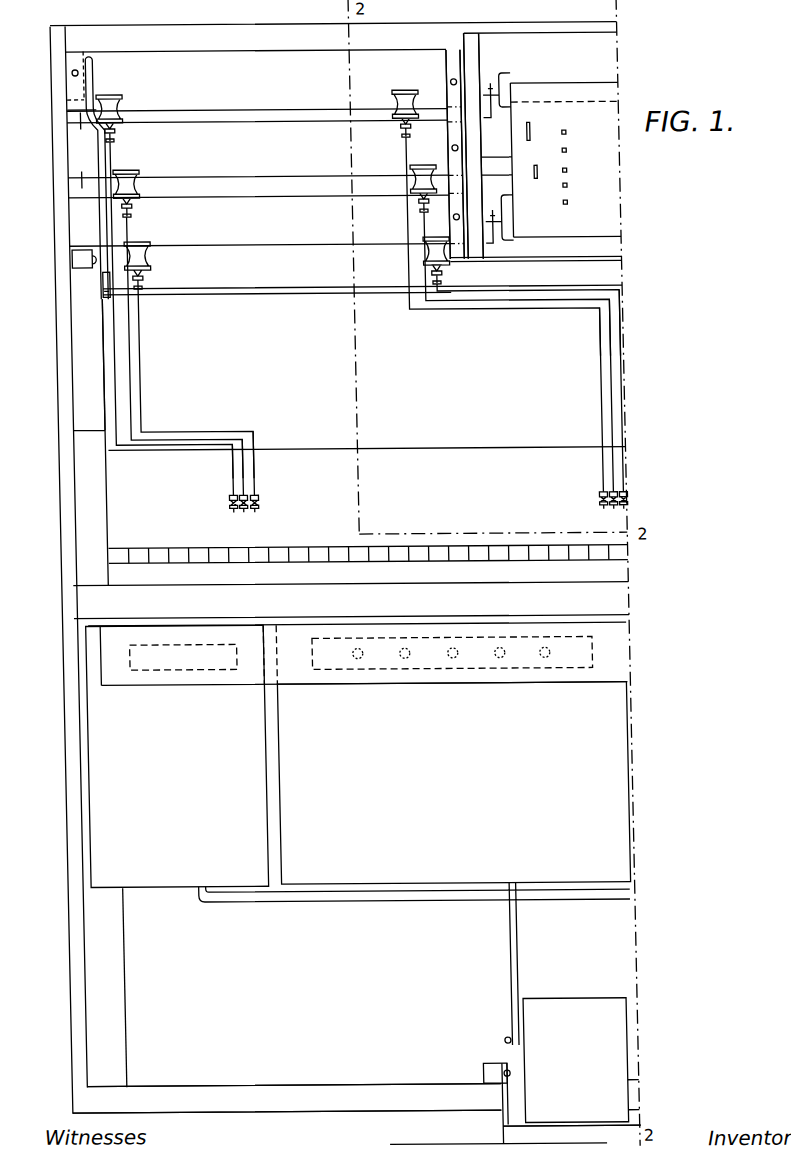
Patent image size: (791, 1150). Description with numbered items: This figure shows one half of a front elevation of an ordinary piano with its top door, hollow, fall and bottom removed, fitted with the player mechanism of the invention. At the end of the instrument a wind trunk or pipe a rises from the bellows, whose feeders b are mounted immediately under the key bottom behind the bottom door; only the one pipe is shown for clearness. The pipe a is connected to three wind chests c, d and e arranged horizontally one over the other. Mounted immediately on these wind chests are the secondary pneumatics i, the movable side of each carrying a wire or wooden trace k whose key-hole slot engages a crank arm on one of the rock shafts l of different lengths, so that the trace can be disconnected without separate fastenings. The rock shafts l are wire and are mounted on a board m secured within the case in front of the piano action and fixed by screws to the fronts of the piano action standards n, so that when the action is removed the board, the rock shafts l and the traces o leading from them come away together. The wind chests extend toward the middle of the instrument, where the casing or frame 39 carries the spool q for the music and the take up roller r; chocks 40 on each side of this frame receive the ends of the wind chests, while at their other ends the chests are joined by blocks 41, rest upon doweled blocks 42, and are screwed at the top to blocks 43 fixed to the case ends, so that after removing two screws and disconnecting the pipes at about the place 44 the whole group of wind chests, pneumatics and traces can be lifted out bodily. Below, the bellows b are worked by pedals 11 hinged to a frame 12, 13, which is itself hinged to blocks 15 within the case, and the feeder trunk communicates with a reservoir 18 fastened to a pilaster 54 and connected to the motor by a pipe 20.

The block 43 is at (83, 53).
The wind trunk or pipe a is at (88, 84).
The block 41 is at (82, 149).
The block 42 is at (77, 250).
The piano action standard n is at (92, 288).
The pipe disconnection place 44 is at (96, 303).
The secondary pneumatic i is at (107, 96).
The trace k is at (110, 370).
The rock shaft l is at (190, 432).
The trace o is at (222, 466).
The wind chest c is at (260, 74).
The wind chest d is at (272, 152).
The wind chest e is at (272, 217).
The board m is at (374, 359).
The chock 40 is at (449, 61).
The casing or frame 39 is at (479, 53).
The spool q is at (509, 82).
The take up roller r is at (506, 219).
The reservoir 18 is at (177, 756).
The feeders or bellows b is at (453, 783).
The pipe 20 is at (374, 904).
The pilaster 54 is at (109, 987).
The pedal 11 is at (576, 1060).
The block 15 is at (468, 1070).
The frame 12 is at (476, 1096).
The frame 13 is at (551, 1136).